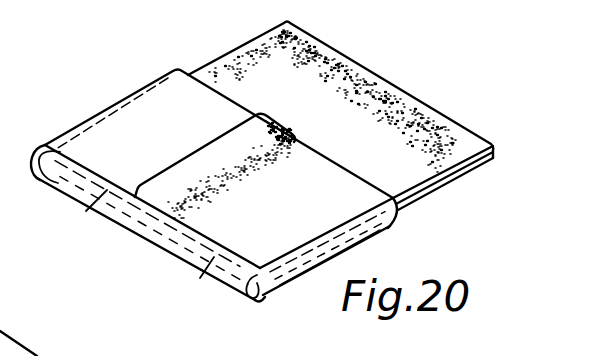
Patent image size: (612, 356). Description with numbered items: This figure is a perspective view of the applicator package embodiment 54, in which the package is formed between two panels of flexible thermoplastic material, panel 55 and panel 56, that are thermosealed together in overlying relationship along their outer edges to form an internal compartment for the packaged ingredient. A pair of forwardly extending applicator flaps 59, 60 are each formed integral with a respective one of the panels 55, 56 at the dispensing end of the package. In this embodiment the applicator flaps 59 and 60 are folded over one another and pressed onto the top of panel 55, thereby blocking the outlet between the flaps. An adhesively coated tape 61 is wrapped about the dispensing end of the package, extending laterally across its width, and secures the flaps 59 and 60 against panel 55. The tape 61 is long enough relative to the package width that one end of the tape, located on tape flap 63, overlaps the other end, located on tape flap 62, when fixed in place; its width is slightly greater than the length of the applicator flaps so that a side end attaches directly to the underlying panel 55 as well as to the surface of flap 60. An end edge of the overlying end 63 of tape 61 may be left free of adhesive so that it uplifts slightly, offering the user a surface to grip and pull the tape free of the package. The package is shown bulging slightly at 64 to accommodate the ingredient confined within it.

The applicator package embodiment 54 is at (343, 112).
The package panel 55 is at (399, 81).
The package panel 56 is at (455, 182).
The applicator flap 59 is at (250, 302).
The applicator flap 60 is at (200, 278).
The adhesively coated tape 61 is at (55, 143).
The tape flap 62 is at (86, 211).
The tape flap 63 is at (195, 163).
The bulge 64 is at (248, 52).